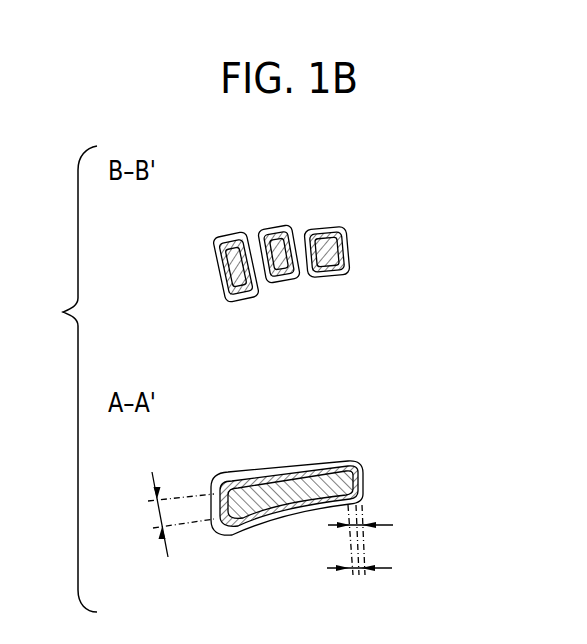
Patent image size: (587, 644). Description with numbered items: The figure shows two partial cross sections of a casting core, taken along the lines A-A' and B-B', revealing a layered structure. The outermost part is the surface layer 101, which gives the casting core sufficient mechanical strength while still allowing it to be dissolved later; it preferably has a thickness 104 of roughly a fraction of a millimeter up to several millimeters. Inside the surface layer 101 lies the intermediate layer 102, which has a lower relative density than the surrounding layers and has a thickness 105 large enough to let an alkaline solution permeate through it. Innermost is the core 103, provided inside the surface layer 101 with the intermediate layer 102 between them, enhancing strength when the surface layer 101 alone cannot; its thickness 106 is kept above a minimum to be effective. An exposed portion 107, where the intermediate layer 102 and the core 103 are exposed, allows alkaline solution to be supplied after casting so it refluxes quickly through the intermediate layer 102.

The surface layer 101 is at (242, 236).
The intermediate layer 102 is at (338, 229).
The core 103 is at (281, 228).
The thickness 104 is at (365, 522).
The thickness 105 is at (362, 567).
The thickness 106 is at (163, 514).
The exposed portion 107 is at (250, 514).